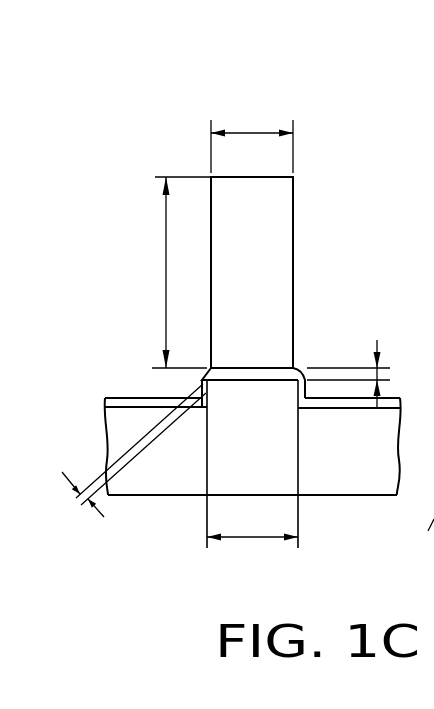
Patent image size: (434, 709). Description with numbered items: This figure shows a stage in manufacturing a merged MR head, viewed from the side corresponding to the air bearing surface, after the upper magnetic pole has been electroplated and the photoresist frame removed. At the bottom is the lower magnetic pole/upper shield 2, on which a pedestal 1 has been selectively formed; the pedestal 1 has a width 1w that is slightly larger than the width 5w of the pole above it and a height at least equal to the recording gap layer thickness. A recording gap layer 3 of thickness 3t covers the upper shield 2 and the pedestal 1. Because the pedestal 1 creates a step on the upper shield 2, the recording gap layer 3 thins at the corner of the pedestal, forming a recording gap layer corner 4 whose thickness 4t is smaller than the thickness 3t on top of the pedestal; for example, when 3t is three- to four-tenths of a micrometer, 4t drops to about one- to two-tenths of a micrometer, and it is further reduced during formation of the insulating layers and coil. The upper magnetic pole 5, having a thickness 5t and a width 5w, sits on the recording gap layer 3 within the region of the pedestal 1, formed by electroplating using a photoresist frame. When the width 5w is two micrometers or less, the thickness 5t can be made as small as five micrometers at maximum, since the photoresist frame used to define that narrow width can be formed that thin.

The pedestal 1 is at (232, 403).
The width of pedestal 1w is at (253, 540).
The lower magnetic pole/upper shield 2 is at (188, 480).
The recording gap layer 3 is at (278, 372).
The recording gap layer thickness 3t is at (378, 341).
The recording gap layer corner 4 is at (301, 375).
The thickness of recording gap layer corner 4t is at (66, 472).
The upper magnetic pole 5 is at (283, 266).
The width of upper magnetic pole 5w is at (254, 133).
The thickness of upper magnetic pole 5t is at (166, 258).